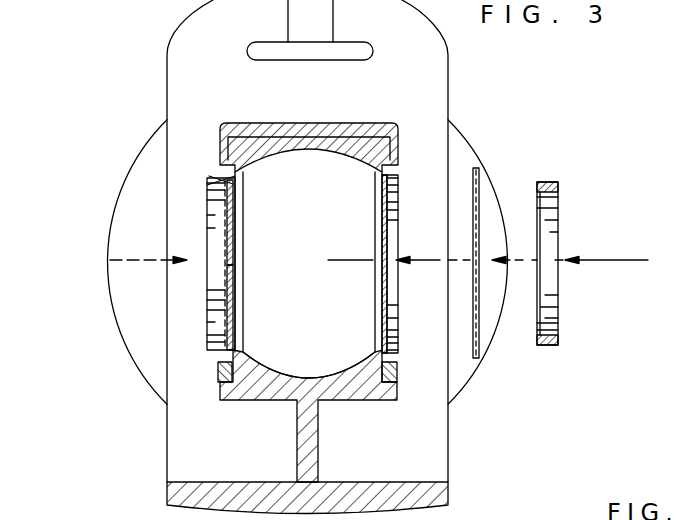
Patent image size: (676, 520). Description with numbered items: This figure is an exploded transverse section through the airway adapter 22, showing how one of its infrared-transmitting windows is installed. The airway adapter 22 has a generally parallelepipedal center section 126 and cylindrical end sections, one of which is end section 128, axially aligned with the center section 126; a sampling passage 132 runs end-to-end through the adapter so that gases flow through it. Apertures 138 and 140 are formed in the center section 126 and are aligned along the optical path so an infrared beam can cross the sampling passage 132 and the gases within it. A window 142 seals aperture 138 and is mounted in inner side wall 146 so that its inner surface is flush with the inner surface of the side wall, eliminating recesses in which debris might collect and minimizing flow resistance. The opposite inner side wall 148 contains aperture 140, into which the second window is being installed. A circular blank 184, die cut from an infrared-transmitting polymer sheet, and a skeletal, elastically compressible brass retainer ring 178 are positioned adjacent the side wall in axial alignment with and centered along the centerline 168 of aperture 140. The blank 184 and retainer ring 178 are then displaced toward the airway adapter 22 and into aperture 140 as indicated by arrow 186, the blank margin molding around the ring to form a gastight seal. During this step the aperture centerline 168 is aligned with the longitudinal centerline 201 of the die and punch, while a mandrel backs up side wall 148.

The airway adapter 22 is at (119, 42).
The center section 126 is at (167, 423).
The end section 128 is at (143, 140).
The sampling passage 132 is at (328, 310).
The aperture 138 is at (238, 341).
The aperture 140 is at (382, 182).
The window 142 is at (226, 205).
The inner side wall 146 is at (210, 350).
The inner side wall 148 is at (398, 148).
The centerline 168 is at (356, 260).
The retainer ring 178 is at (550, 346).
The blank 184 is at (480, 178).
The arrow 186 is at (428, 262).
The longitudinal centerline 201 is at (598, 260).